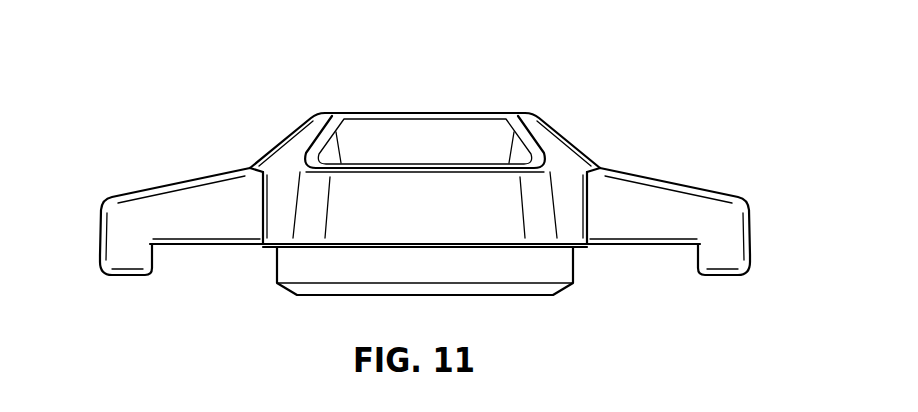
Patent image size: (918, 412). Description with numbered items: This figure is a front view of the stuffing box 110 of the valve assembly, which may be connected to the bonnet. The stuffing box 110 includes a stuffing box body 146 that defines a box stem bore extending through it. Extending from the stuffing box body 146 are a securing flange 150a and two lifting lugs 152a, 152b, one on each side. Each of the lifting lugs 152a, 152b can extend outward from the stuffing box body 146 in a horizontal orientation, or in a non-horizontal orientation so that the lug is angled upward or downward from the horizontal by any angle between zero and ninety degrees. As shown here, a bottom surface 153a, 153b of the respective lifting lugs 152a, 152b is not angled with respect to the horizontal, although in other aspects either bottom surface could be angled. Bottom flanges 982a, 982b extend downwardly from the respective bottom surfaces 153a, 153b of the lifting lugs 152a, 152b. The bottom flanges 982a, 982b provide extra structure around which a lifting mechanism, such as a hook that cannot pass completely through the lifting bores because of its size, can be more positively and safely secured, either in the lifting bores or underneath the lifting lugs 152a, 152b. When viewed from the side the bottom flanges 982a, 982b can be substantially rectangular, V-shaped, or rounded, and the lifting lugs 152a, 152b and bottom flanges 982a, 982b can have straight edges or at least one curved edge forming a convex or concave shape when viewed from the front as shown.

The stuffing box 110 is at (663, 50).
The stuffing box body 146 is at (300, 127).
The securing flange 150a is at (457, 185).
The lifting lug 152a is at (187, 182).
The lifting lug 152b is at (662, 197).
The bottom surface 153a is at (207, 247).
The bottom surface 153b is at (620, 247).
The bottom flange 982a is at (152, 277).
The bottom flange 982b is at (699, 255).